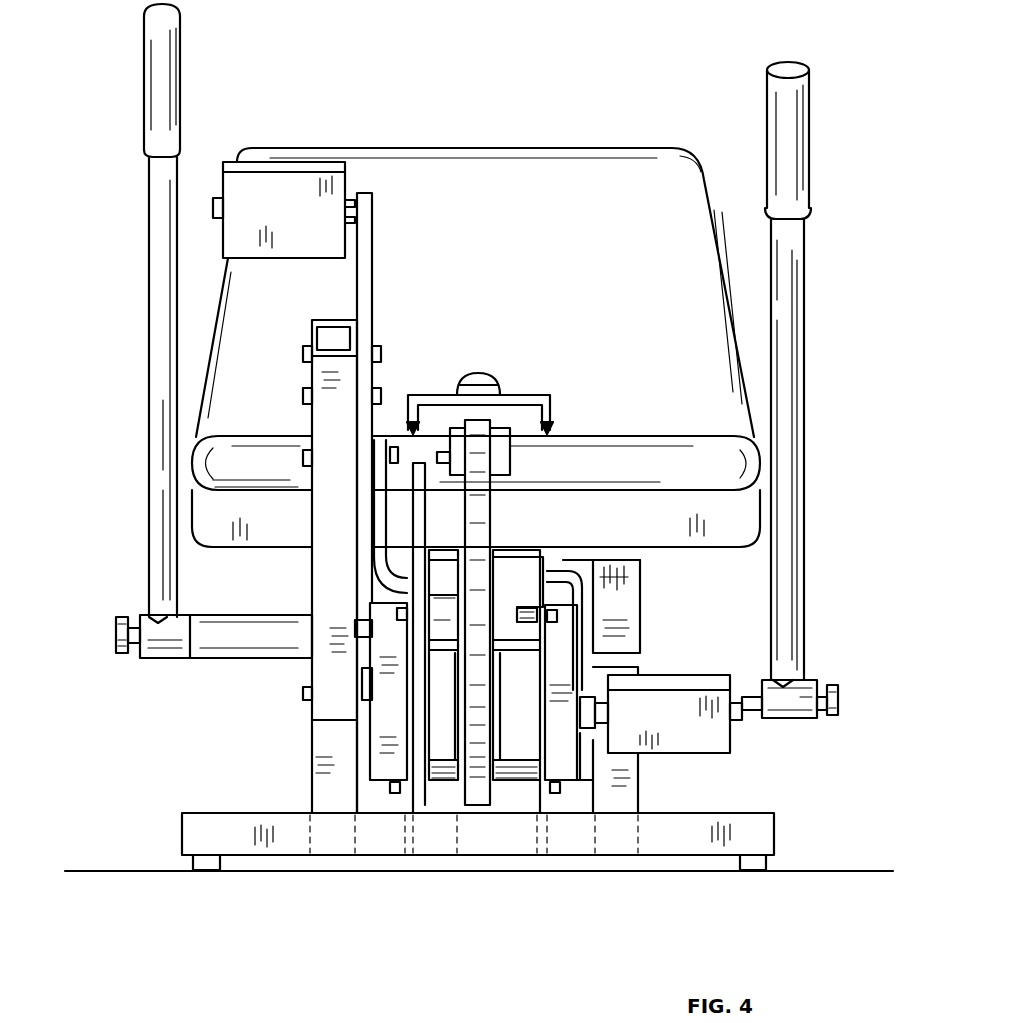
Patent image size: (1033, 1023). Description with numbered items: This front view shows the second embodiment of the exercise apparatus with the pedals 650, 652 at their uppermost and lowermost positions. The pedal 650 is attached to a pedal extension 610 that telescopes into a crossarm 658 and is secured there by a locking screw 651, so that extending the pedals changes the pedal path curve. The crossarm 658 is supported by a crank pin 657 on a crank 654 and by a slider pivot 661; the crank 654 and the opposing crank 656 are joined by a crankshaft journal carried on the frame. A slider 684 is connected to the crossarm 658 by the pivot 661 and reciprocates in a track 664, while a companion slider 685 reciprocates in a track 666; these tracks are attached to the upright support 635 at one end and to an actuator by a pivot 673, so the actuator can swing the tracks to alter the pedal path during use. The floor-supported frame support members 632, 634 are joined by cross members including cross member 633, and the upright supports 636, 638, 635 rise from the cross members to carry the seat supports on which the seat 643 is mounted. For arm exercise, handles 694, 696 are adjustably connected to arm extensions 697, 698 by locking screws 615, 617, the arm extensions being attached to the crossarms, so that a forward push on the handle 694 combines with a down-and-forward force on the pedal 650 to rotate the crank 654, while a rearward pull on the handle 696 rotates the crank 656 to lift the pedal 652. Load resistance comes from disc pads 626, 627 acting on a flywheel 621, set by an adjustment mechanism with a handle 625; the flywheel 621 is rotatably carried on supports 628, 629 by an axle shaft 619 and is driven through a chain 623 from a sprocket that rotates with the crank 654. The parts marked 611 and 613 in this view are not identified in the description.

The pedal extension 610 is at (372, 248).
The mounting tab 611 is at (212, 200).
The fitting 613 is at (760, 700).
The locking screw 615 is at (116, 657).
The locking screw 617 is at (840, 696).
The axle shaft 619 is at (524, 622).
The flywheel 621 is at (493, 533).
The chain 623 is at (427, 517).
The handle 625 is at (485, 375).
The disc pad 626 is at (447, 462).
The disc pad 627 is at (510, 432).
The support 628 is at (550, 792).
The support 629 is at (410, 783).
The frame support member 632 is at (325, 835).
The cross member 633 is at (768, 858).
The frame support member 634 is at (625, 832).
The upright support 635 is at (502, 800).
The upright support 636 is at (313, 745).
The upright support 638 is at (640, 797).
The seat 643 is at (392, 150).
The pedal 650 is at (235, 162).
The locking screw 651 is at (383, 397).
The pedal 652 is at (720, 675).
The crank 654 is at (377, 515).
The crank 656 is at (641, 562).
The crank pin 657 is at (304, 457).
The crossarm 658 is at (314, 572).
The slider pivot 661 is at (303, 693).
The track 664 is at (370, 735).
The track 666 is at (581, 767).
The pivot 673 is at (437, 783).
The slider 684 is at (363, 718).
The slider 685 is at (594, 667).
The handle 694 is at (147, 270).
The handle 696 is at (766, 120).
The arm extension 697 is at (200, 660).
The arm extension 698 is at (752, 718).